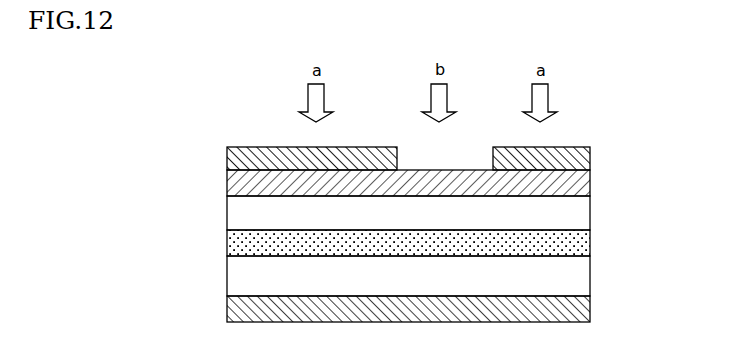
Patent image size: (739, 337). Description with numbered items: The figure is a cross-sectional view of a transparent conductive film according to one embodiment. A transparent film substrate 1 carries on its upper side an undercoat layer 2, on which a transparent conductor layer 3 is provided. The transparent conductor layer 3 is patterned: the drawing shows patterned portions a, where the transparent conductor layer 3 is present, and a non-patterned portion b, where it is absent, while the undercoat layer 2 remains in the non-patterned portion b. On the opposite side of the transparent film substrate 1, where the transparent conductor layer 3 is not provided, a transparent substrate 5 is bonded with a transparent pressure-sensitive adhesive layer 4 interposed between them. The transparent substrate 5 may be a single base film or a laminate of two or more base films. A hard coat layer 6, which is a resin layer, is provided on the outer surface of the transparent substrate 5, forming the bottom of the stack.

The transparent film substrate 1 is at (583, 215).
The undercoat layer 2 is at (590, 187).
The transparent conductor layer 3 is at (228, 160).
The transparent pressure-sensitive adhesive layer 4 is at (585, 244).
The transparent substrate 5 is at (585, 278).
The hard coat layer 6 is at (585, 308).